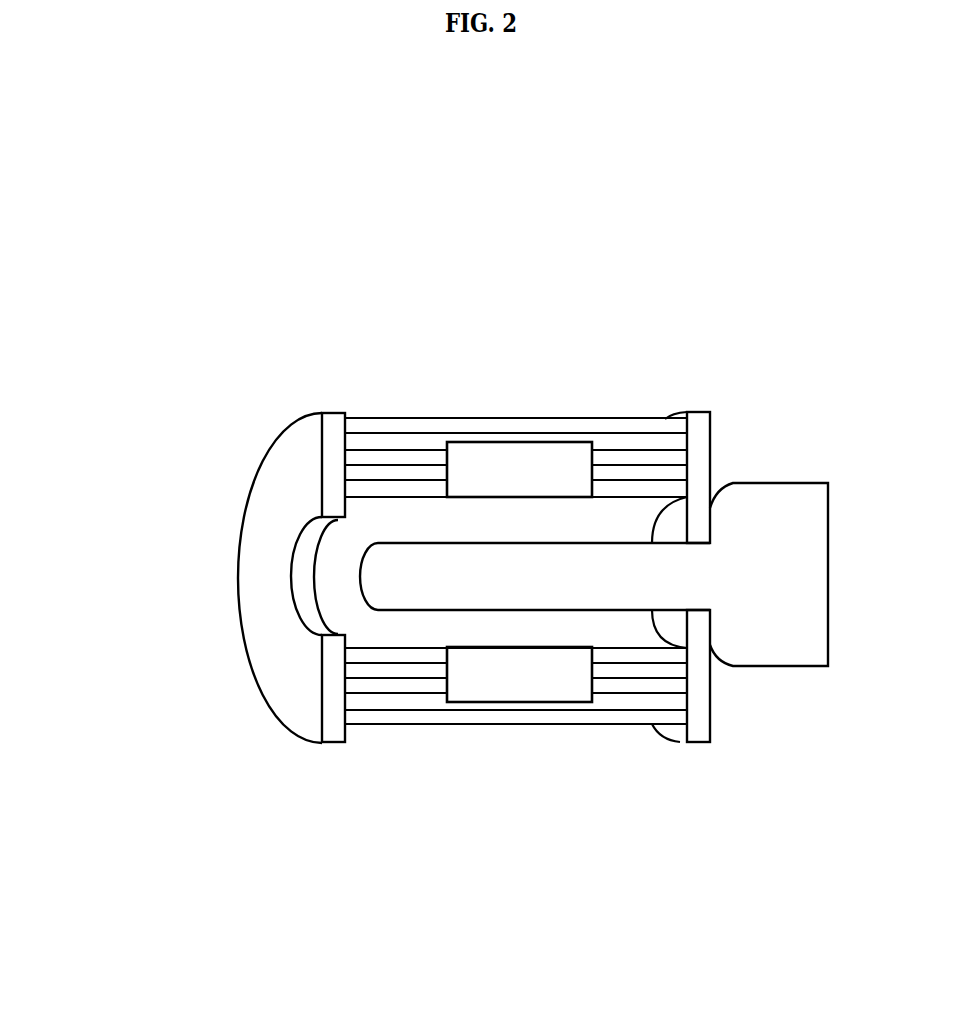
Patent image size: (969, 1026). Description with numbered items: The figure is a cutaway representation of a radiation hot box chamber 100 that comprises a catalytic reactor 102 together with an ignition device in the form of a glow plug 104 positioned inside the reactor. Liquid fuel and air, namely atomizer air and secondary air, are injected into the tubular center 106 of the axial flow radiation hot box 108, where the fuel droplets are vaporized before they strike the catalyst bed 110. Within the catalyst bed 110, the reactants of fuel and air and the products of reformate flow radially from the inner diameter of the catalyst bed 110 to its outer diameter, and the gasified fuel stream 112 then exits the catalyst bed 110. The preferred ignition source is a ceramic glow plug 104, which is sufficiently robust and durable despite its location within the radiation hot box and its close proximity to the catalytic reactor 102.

The radiation hot box chamber 100 is at (444, 210).
The catalytic reactor 102 is at (290, 465).
The glow plug 104 is at (773, 497).
The tubular center 106 is at (266, 580).
The axial flow radiation hot box 108 is at (343, 600).
The catalyst bed 110 is at (395, 683).
The gasified fuel stream 112 is at (622, 418).